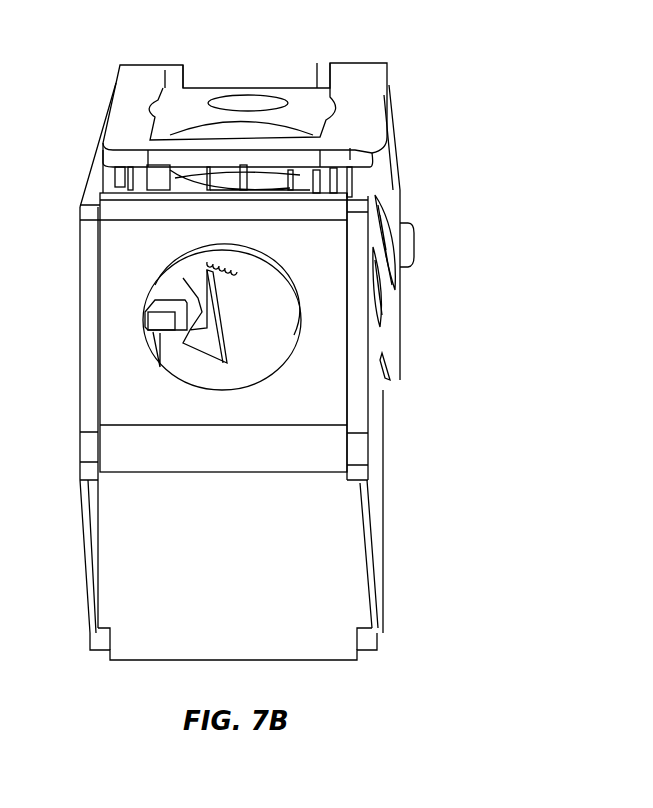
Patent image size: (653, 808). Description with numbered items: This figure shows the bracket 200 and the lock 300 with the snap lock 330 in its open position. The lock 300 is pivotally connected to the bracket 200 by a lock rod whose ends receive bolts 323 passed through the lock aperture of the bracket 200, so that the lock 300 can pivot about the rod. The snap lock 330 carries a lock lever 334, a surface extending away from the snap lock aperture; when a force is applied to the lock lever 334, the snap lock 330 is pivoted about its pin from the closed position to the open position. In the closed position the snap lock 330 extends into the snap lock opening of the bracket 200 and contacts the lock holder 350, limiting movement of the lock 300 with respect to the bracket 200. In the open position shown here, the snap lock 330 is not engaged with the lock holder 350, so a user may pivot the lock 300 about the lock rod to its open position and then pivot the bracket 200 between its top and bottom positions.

The bracket 200 is at (372, 430).
The lock 300 is at (352, 92).
The bolts 323 is at (405, 243).
The snap lock 330 is at (198, 291).
The lock lever 334 is at (253, 183).
The lock holder 350 is at (160, 322).